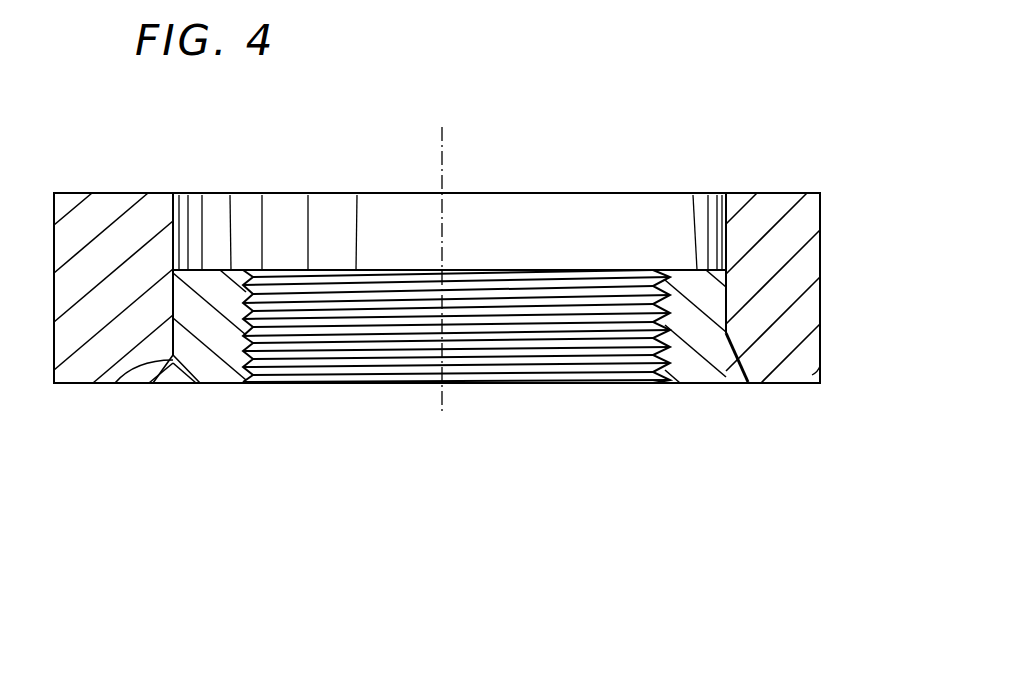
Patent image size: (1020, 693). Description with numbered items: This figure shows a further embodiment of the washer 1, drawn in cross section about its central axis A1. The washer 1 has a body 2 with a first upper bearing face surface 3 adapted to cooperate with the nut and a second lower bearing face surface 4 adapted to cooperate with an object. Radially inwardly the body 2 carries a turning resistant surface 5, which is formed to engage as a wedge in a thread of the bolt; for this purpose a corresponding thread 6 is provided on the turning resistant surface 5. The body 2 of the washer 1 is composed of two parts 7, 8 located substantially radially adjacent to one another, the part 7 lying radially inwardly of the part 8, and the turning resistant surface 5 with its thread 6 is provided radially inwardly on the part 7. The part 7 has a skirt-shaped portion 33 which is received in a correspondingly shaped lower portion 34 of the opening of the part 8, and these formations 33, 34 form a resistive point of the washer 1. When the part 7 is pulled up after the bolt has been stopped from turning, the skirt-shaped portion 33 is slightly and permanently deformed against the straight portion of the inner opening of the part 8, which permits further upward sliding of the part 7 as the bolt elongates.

The washer 1 is at (44, 172).
The body 2 is at (835, 192).
The first upper bearing face surface 3 is at (749, 190).
The second lower bearing face surface 4 is at (786, 386).
The turning resistant surface 5 is at (648, 386).
The thread 6 is at (277, 386).
The part 7 is at (698, 386).
The part 8 is at (810, 342).
The skirt-shaped portion 33 is at (182, 386).
The lower portion of an opening 34 is at (120, 386).
The axis A1 is at (442, 162).